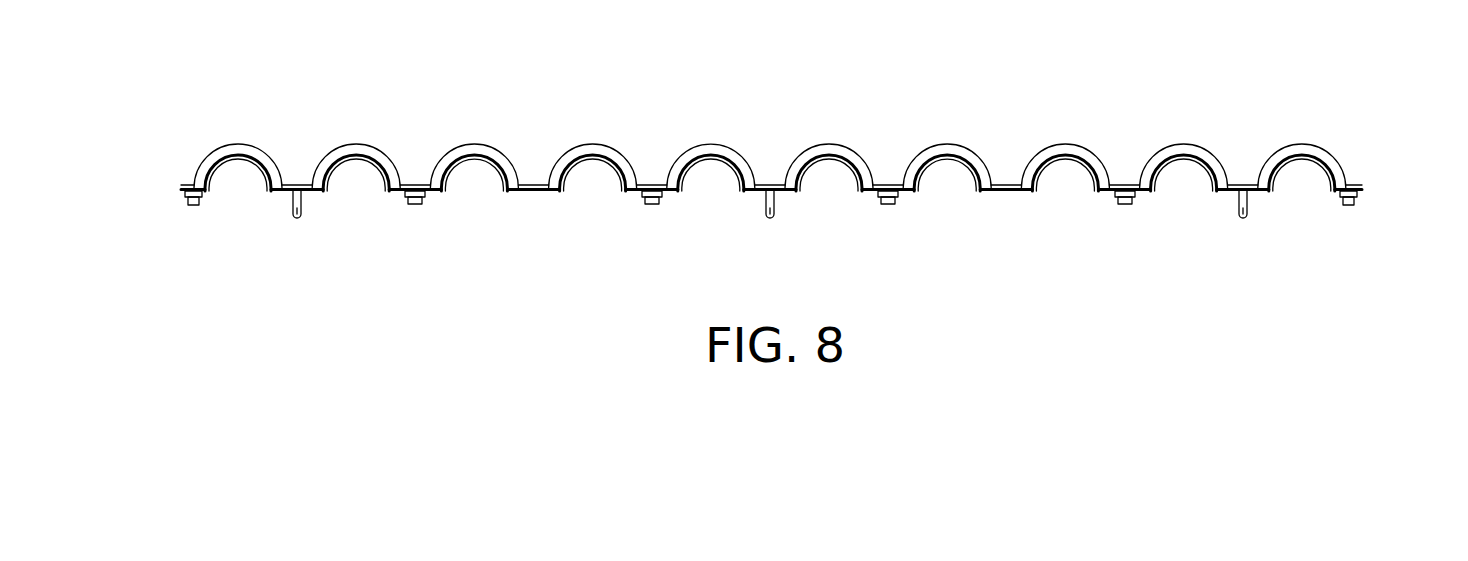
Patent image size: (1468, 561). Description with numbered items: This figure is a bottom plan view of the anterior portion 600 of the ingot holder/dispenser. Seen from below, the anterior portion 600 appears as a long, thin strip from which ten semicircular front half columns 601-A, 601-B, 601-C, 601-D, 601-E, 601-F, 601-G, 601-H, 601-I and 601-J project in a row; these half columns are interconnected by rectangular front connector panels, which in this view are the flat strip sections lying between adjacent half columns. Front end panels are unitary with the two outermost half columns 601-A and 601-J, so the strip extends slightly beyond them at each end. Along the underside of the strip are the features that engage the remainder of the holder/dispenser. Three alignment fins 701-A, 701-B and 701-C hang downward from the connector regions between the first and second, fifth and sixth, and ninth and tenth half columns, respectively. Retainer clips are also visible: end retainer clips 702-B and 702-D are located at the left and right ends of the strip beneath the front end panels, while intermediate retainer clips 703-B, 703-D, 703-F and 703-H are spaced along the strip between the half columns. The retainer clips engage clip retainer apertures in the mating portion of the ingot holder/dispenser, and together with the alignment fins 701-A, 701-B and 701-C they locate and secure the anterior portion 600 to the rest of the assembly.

The anterior portion 600 is at (768, 185).
The front half column 601-A is at (217, 163).
The front half column 601-B is at (335, 163).
The front half column 601-C is at (453, 163).
The front half column 601-D is at (572, 163).
The front half column 601-E is at (690, 163).
The front half column 601-F is at (808, 163).
The front half column 601-G is at (926, 163).
The front half column 601-H is at (1044, 163).
The front half column 601-I is at (1163, 163).
The front half column 601-J is at (1281, 163).
The alignment fin 701-A is at (297, 219).
The alignment fin 701-B is at (770, 219).
The alignment fin 701-C is at (1243, 219).
The retainer clip 702-B is at (193, 206).
The retainer clip 702-D is at (1350, 206).
The retainer clip 703-B is at (415, 205).
The retainer clip 703-D is at (651, 205).
The retainer clip 703-F is at (888, 205).
The retainer clip 703-H is at (1124, 205).